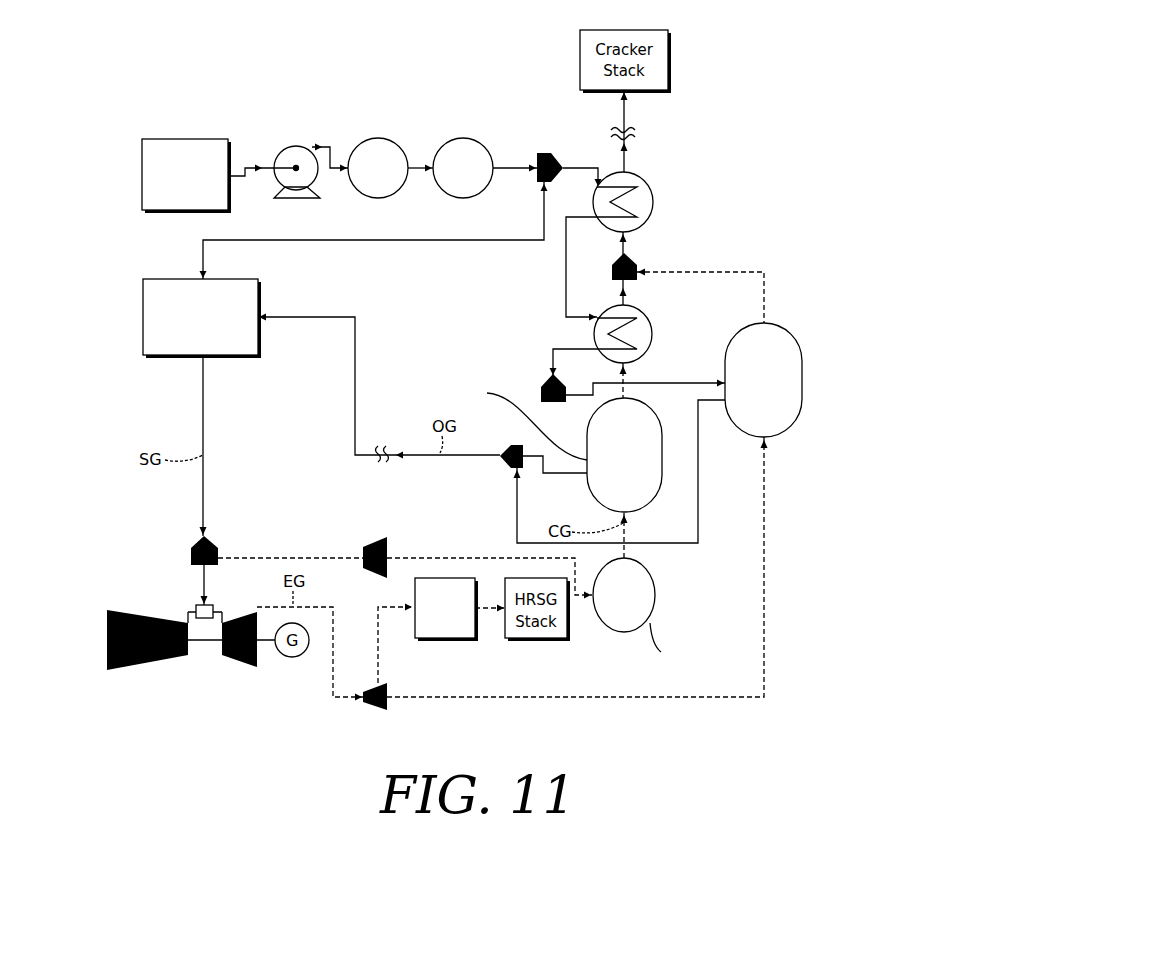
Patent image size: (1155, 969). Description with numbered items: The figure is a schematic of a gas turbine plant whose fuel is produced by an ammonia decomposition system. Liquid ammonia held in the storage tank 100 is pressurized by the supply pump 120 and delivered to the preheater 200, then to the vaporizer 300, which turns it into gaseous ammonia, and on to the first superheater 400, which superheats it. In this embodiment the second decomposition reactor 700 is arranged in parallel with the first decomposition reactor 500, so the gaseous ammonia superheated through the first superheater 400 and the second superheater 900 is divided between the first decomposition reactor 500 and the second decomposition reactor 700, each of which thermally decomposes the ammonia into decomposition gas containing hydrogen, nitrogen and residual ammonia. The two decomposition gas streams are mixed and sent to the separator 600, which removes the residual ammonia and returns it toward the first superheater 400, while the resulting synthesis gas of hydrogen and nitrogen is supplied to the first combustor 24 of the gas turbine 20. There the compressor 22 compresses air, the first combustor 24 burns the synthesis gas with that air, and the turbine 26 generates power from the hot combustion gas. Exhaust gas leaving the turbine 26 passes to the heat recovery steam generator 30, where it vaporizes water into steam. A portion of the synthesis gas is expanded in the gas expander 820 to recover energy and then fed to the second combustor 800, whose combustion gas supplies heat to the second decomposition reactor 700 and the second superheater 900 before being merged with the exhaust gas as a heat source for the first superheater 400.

The storage tank 100 is at (188, 139).
The supply pump 120 is at (296, 160).
The preheater 200 is at (378, 160).
The vaporizer 300 is at (463, 160).
The first superheater 400 is at (654, 202).
The first decomposition reactor 500 is at (802, 380).
The separator 600 is at (143, 316).
The second decomposition reactor 700 is at (587, 490).
The second combustor 800 is at (655, 578).
The second superheater 900 is at (652, 334).
The gas expander 820 is at (373, 542).
The gas turbine 20 is at (191, 670).
The compressor 22 is at (145, 672).
The first combustor 24 is at (203, 619).
The turbine 26 is at (239, 658).
The heat recovery steam generator 30 is at (445, 640).